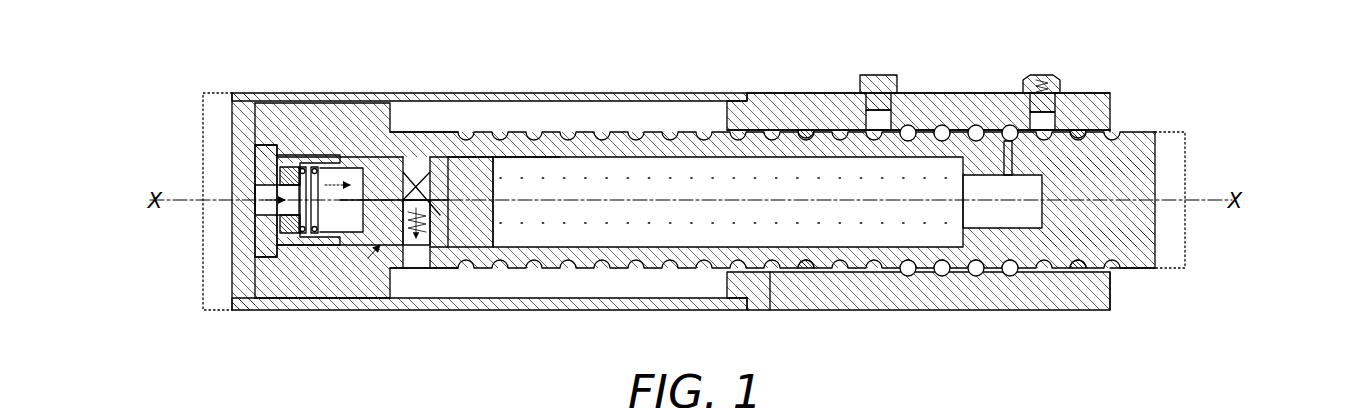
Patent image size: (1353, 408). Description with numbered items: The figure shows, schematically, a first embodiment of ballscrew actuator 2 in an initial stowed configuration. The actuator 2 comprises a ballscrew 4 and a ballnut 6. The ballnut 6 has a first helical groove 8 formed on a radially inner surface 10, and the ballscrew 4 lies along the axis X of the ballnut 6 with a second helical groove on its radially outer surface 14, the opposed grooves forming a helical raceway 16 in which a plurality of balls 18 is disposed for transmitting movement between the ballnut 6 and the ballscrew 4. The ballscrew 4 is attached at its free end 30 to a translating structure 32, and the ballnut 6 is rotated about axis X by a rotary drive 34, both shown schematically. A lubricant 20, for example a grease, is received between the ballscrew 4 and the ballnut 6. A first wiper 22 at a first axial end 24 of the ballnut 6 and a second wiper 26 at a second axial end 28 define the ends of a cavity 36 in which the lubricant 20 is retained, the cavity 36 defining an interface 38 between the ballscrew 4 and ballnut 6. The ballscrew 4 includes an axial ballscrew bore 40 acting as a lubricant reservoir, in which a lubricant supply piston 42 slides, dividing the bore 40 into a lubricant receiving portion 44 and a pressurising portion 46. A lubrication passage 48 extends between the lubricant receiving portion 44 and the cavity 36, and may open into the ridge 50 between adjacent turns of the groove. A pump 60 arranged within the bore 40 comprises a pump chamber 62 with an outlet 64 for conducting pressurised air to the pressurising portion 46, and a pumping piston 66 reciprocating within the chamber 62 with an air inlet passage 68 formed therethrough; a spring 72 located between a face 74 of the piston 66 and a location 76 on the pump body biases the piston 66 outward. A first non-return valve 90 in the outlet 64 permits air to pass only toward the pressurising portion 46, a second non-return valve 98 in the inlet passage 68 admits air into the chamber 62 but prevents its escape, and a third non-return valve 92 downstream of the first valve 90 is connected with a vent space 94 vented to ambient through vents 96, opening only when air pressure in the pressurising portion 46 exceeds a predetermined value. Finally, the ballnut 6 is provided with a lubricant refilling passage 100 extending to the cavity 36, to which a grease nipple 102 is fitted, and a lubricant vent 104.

The ballscrew actuator 2 is at (1195, 92).
The ballscrew 4 is at (1150, 213).
The ballnut 6 is at (975, 295).
The first helical groove 8 is at (908, 128).
The radially inner surface 10 is at (760, 128).
The radially outer surface 14 is at (713, 128).
The helical raceway 16 is at (942, 128).
The balls 18 is at (905, 275).
The lubricant 20 is at (647, 183).
The first wiper 22 is at (806, 128).
The first axial end 24 is at (790, 100).
The second wiper 26 is at (1090, 130).
The second axial end 28 is at (1085, 290).
The free end 30 is at (1143, 258).
The translating structure 32 is at (1180, 140).
The rotary drive 34 is at (215, 105).
The cavity 36 is at (940, 272).
The interface 38 is at (1005, 275).
The ballscrew bore 40 is at (553, 160).
The lubricant supply piston 42 is at (468, 165).
The lubricant receiving portion 44 is at (605, 183).
The pressurising portion 46 is at (440, 170).
The lubrication passage 48 is at (1008, 150).
The ridge 50 is at (1003, 128).
The pump 60 is at (372, 250).
The pump chamber 62 is at (382, 185).
The outlet 64 is at (440, 250).
The pumping piston 66 is at (267, 258).
The air inlet passage 68 is at (258, 197).
The spring 72 is at (290, 247).
The face 74 is at (306, 165).
The location 76 is at (317, 165).
The first non-return valve 90 is at (300, 242).
The third non-return valve 92 is at (418, 248).
The vent space 94 is at (590, 290).
The vents 96 is at (773, 305).
The second non-return valve 98 is at (258, 205).
The lubricant refilling passage 100 is at (1047, 118).
The grease nipple 102 is at (1050, 78).
The lubricant vent 104 is at (884, 86).